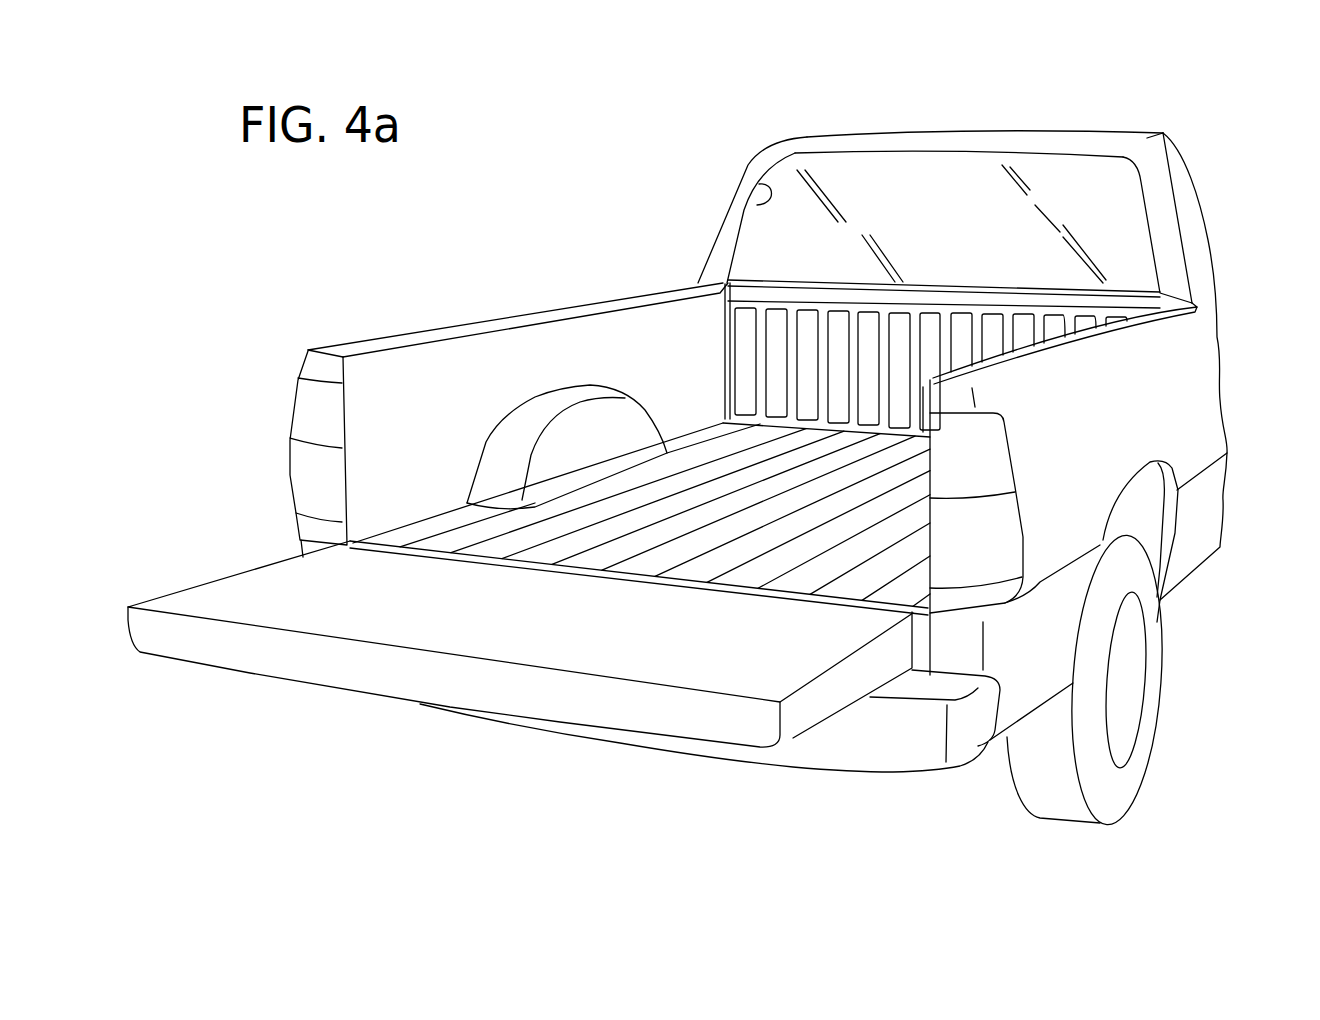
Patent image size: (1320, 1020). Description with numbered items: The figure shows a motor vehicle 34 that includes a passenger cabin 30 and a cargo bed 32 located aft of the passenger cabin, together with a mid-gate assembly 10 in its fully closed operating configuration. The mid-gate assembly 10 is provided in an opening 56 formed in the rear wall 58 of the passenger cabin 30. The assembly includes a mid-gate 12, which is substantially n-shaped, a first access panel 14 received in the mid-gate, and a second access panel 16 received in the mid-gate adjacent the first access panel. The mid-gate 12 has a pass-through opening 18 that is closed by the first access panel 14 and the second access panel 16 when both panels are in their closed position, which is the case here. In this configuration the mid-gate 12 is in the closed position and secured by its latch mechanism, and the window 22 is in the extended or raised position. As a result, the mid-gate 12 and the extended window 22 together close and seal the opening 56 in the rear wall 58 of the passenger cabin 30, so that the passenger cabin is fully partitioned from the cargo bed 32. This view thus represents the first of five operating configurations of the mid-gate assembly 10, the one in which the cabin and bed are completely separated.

The mid-gate assembly 10 is at (673, 258).
The mid-gate 12 is at (1133, 300).
The first access panel 14 is at (777, 337).
The second access panel 16 is at (1053, 330).
The pass-through opening 18 is at (937, 305).
The window 22 is at (943, 205).
The passenger cabin 30 is at (1173, 182).
The cargo bed 32 is at (528, 355).
The motor vehicle 34 is at (1180, 118).
The opening 56 is at (757, 205).
The rear wall 58 is at (852, 143).